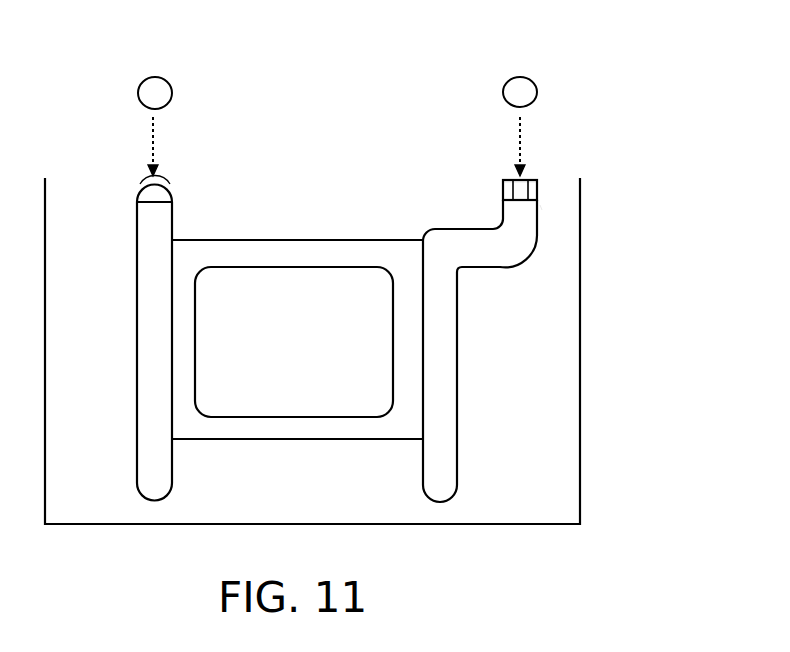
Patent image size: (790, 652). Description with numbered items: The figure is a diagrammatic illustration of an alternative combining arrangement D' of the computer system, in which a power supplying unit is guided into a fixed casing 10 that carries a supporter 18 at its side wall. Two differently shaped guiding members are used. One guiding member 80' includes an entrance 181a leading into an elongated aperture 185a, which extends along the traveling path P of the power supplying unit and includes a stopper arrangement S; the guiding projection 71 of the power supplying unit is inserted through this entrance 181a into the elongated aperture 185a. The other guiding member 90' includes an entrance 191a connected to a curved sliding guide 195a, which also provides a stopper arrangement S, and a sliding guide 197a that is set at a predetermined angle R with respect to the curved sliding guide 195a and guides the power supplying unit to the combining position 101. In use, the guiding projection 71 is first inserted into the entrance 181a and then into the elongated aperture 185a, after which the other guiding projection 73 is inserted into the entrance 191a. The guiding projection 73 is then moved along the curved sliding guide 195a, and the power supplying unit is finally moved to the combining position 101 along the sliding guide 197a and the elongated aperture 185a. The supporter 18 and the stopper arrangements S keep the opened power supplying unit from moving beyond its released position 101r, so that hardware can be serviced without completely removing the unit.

The fixed casing 10 is at (584, 435).
The supporter 18 is at (313, 235).
The guiding projection 71 is at (160, 77).
The guiding projection 73 is at (523, 76).
The guiding member 80' is at (129, 153).
The guiding member 90' is at (544, 134).
The combining position 101 is at (156, 506).
The released position 101r is at (184, 190).
The entrance 181a is at (165, 198).
The elongated aperture 185a is at (137, 291).
The entrance 191a is at (545, 178).
The curved sliding guide 195a is at (538, 222).
The sliding guide 197a is at (458, 418).
The traveling path P is at (135, 351).
The predetermined angle R is at (494, 272).
The stopper arrangement S is at (134, 200).
The combining arrangement D' is at (350, 88).